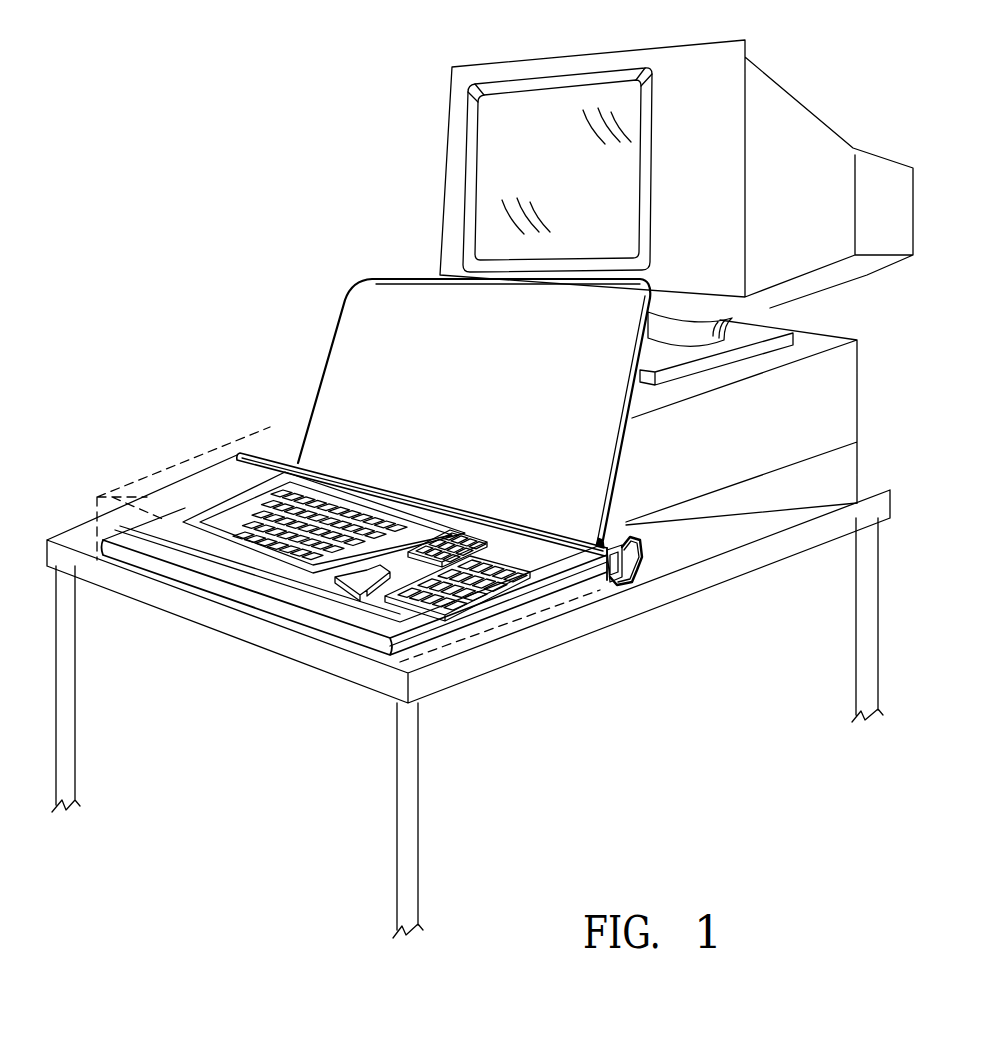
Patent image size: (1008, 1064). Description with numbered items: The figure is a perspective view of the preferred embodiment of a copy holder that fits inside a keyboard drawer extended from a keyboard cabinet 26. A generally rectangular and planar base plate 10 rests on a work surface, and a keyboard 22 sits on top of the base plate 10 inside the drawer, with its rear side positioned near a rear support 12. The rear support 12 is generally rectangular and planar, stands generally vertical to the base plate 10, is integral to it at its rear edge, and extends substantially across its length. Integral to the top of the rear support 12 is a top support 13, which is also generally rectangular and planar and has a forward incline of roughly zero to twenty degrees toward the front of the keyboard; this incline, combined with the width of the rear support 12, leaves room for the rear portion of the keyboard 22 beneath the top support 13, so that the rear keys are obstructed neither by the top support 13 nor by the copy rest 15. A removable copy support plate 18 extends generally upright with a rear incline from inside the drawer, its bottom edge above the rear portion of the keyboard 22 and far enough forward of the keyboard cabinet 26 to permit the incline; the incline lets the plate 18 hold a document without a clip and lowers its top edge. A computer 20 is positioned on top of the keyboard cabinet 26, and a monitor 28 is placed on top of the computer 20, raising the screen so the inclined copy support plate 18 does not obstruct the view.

The base plate 10 is at (510, 625).
The rear support 12 is at (630, 563).
The top support 13 is at (610, 583).
The copy rest 15 is at (466, 517).
The copy support plate 18 is at (405, 405).
The computer 20 is at (803, 420).
The keyboard 22 is at (238, 525).
The keyboard cabinet 26 is at (830, 495).
The monitor 28 is at (821, 193).